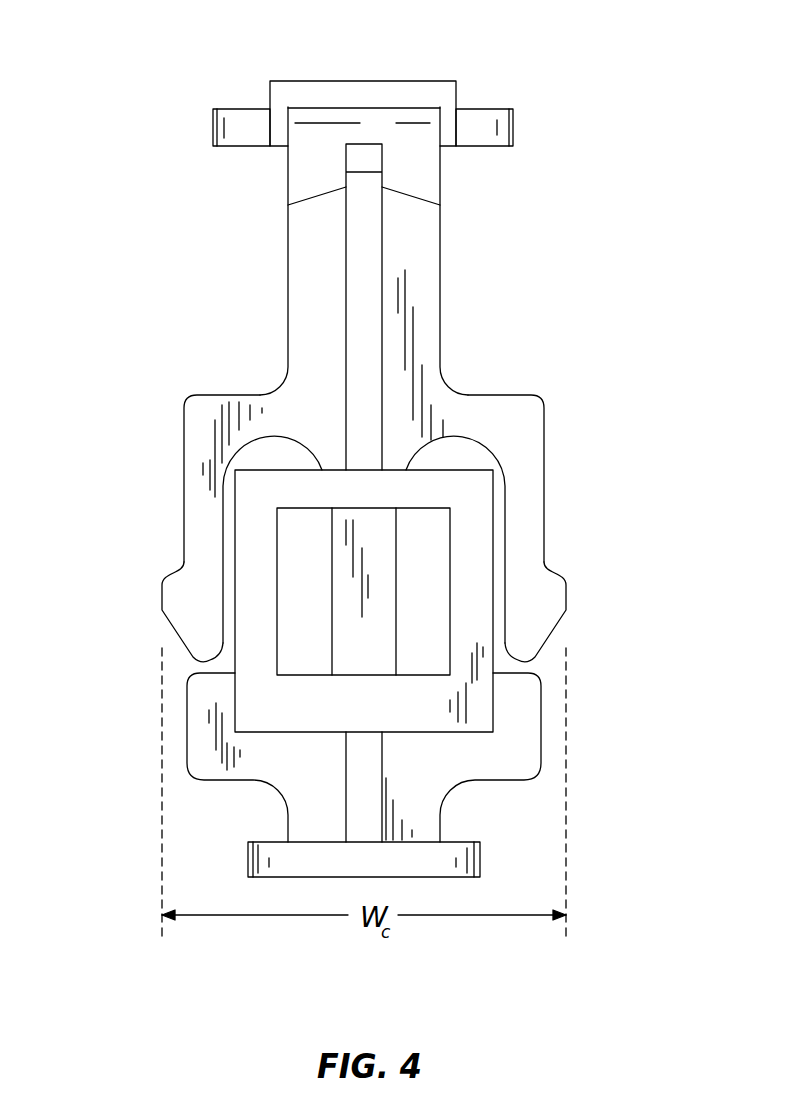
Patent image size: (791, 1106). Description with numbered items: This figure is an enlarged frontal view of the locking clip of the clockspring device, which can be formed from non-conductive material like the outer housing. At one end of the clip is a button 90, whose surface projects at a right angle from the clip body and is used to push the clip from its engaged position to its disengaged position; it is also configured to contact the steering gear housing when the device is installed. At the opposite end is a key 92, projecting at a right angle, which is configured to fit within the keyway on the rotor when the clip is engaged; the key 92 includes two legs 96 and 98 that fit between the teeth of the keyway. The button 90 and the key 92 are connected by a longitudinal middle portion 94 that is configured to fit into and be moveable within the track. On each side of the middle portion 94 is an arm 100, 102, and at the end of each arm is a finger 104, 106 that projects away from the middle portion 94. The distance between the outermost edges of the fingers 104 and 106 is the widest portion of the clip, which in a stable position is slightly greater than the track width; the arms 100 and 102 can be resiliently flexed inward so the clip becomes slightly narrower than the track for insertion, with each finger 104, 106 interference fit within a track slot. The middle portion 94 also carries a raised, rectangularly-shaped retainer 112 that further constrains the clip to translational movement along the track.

The button 90 is at (482, 860).
The key 92 is at (380, 80).
The longitudinal middle portion 94 is at (365, 327).
The leg 96 is at (210, 128).
The leg 98 is at (513, 127).
The arm 100 is at (200, 494).
The arm 102 is at (525, 459).
The finger 104 is at (158, 593).
The finger 106 is at (570, 595).
The retainer 112 is at (292, 485).